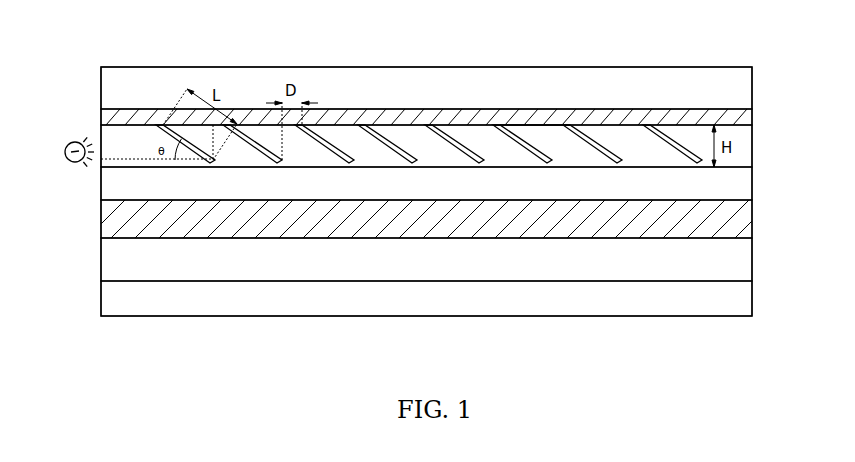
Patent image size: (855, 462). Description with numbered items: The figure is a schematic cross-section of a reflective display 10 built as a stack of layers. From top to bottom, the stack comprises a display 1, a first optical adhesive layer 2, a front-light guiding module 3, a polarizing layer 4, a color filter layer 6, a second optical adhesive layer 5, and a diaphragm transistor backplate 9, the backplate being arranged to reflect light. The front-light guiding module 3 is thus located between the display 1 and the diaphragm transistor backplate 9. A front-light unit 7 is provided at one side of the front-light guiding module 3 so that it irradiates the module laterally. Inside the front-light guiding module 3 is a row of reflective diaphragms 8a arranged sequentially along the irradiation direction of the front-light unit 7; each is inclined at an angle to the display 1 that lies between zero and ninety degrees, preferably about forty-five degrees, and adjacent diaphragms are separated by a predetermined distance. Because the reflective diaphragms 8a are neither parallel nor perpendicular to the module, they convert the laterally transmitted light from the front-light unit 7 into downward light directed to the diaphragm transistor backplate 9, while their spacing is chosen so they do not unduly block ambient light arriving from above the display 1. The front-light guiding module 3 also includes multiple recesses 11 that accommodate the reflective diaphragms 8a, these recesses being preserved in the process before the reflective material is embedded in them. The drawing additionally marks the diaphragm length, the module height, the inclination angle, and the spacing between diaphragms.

The reflective display 10 is at (180, 54).
The display 1 is at (742, 96).
The first optical adhesive layer 2 is at (742, 122).
The front-light guiding module 3 is at (742, 151).
The reflective diaphragms 8a is at (460, 138).
The recesses 11 is at (528, 128).
The polarizing layer 4 is at (742, 187).
The color filter layer 6 is at (735, 231).
The second optical adhesive layer 5 is at (737, 262).
The diaphragm transistor backplate 9 is at (735, 303).
The front-light unit 7 is at (63, 153).